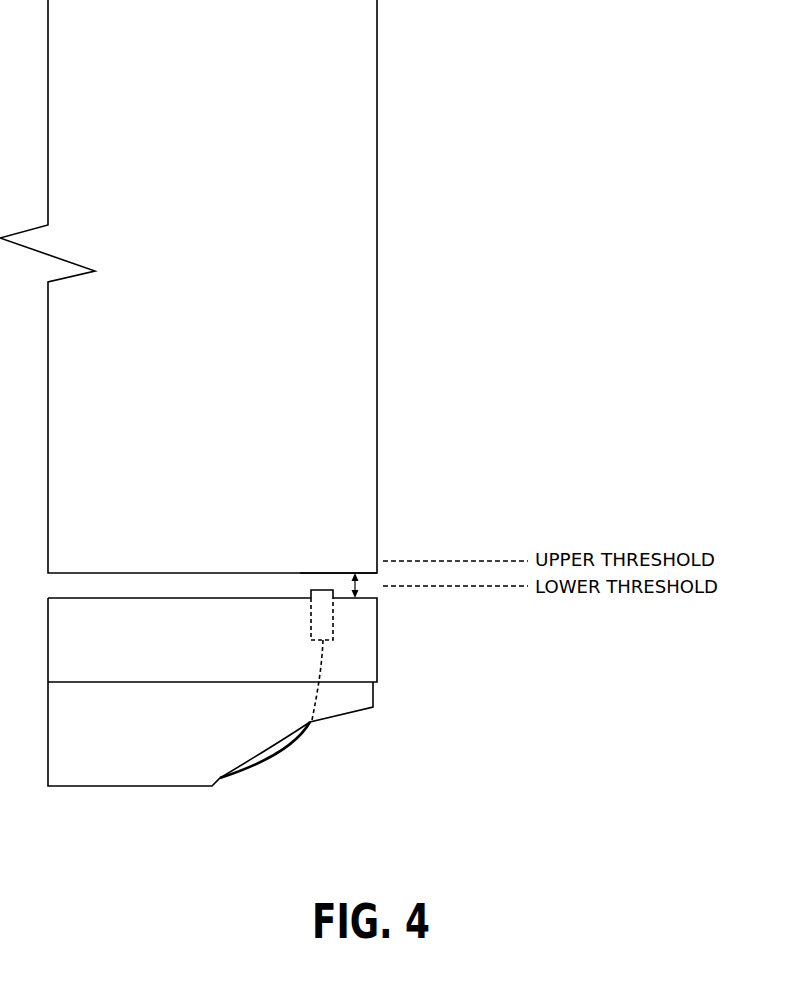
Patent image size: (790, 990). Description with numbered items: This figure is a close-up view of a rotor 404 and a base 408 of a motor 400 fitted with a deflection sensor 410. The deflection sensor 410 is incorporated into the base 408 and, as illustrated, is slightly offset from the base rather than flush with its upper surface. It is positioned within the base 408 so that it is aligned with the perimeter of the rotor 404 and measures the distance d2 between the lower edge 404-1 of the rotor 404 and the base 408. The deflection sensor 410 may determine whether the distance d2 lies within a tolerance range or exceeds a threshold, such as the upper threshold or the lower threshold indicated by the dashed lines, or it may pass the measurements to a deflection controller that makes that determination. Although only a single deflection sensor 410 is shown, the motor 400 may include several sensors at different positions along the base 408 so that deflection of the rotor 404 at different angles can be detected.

The motor 400 is at (455, 175).
The rotor 404 is at (343, 336).
The lower edge of the rotor 404-1 is at (315, 573).
The base 408 is at (352, 649).
The deflection sensor 410 is at (320, 622).
The distance d2 is at (360, 590).